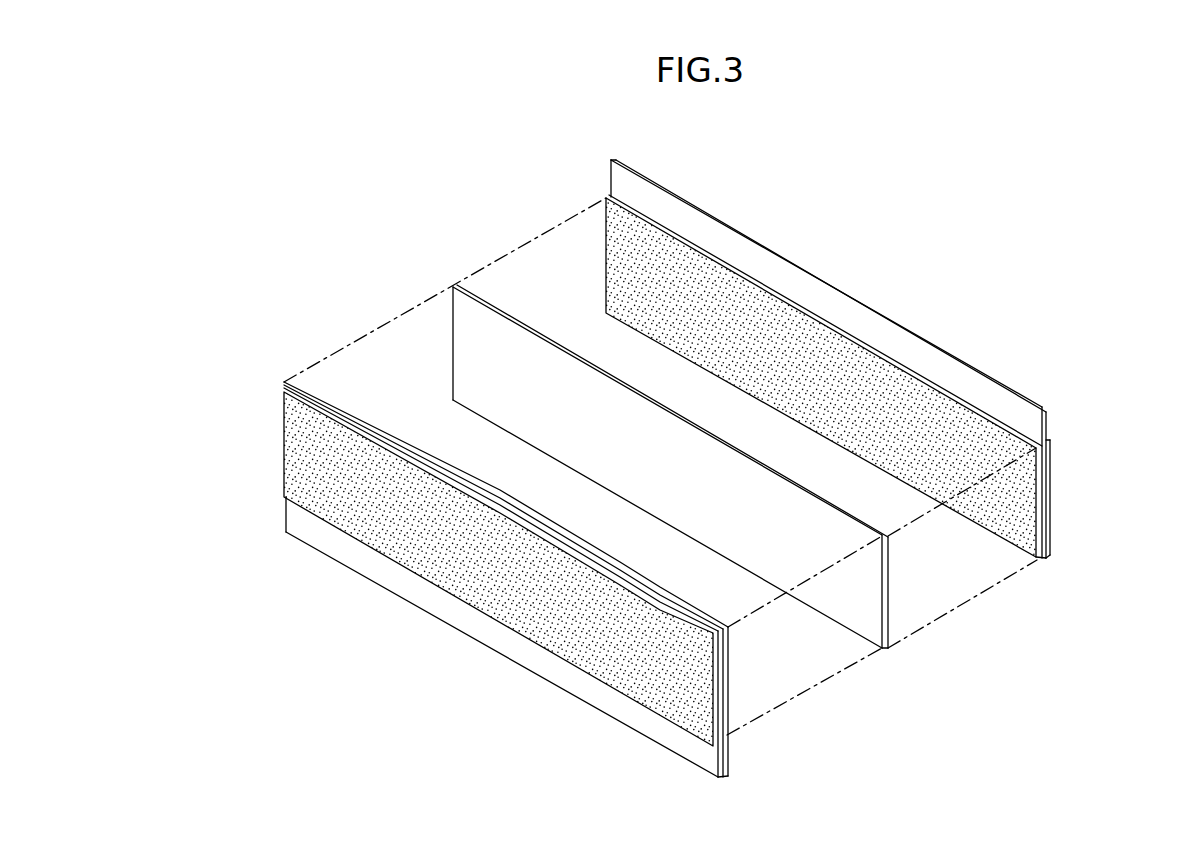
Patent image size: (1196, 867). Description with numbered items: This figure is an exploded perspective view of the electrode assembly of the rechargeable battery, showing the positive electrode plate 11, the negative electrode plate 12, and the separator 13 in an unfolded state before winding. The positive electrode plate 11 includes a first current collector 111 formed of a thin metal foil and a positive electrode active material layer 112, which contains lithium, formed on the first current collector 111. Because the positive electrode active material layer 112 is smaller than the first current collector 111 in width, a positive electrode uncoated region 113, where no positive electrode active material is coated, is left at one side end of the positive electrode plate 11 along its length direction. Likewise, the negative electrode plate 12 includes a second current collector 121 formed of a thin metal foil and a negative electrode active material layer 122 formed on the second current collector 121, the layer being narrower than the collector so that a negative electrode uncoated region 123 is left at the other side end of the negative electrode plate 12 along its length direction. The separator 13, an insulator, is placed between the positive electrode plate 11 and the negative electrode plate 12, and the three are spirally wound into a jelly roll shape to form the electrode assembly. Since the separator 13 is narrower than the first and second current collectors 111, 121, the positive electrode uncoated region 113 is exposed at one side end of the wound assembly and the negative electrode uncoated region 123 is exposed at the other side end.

The positive electrode plate 11 is at (527, 578).
The negative electrode plate 12 is at (825, 355).
The separator 13 is at (434, 328).
The first current collector 111 is at (722, 685).
The positive electrode active material layer 112 is at (477, 484).
The positive electrode uncoated region 113 is at (530, 670).
The second current collector 121 is at (1042, 473).
The negative electrode active material layer 122 is at (1023, 533).
The negative electrode uncoated region 123 is at (983, 397).